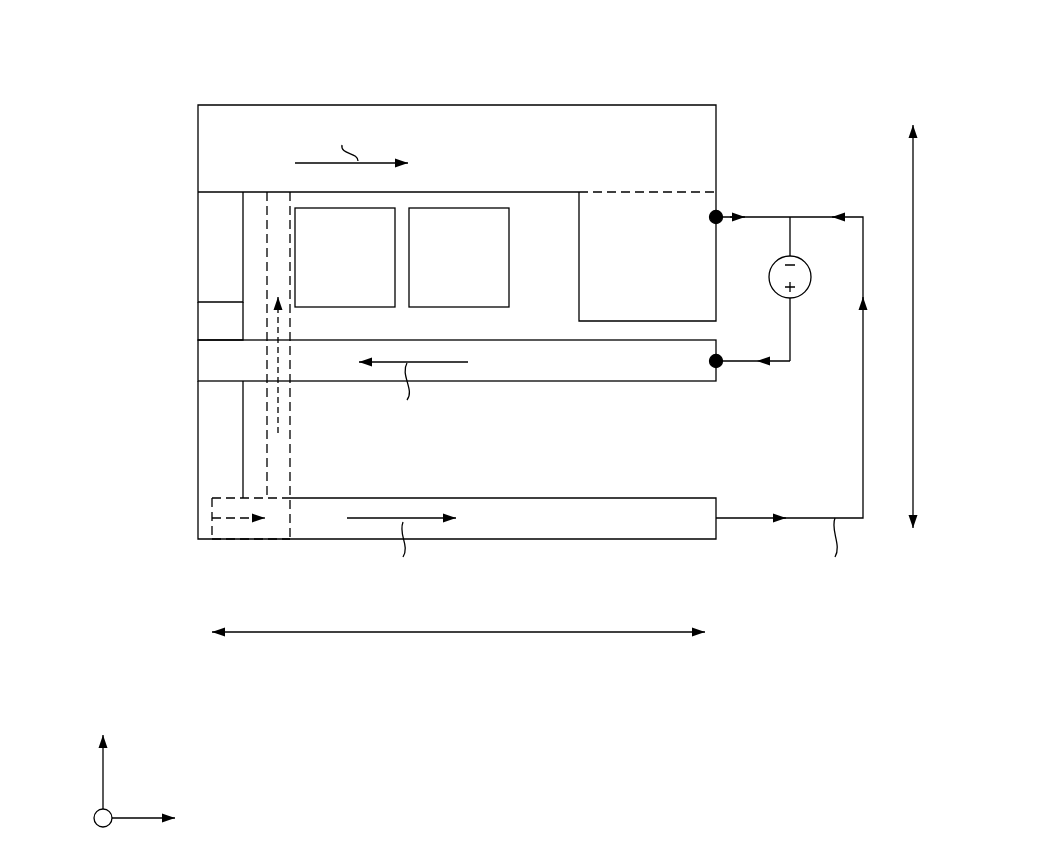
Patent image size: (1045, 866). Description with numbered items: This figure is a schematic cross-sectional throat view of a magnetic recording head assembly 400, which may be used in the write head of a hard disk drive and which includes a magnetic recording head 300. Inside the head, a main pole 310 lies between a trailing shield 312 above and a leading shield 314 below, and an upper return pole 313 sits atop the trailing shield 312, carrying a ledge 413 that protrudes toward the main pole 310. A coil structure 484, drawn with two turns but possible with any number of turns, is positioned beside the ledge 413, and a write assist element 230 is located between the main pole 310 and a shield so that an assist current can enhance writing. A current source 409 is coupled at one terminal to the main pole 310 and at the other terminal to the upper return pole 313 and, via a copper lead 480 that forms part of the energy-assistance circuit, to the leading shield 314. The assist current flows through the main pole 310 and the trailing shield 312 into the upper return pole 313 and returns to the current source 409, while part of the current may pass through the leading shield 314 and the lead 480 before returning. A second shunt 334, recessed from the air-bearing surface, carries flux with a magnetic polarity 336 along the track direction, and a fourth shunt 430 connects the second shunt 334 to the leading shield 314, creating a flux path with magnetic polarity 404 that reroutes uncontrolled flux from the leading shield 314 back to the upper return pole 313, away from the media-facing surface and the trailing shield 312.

The magnetic recording head assembly 400 is at (136, 60).
The magnetic recording head 300 is at (176, 145).
The upper return pole 313 is at (549, 148).
The trailing shield 312 is at (217, 230).
The second shunt 334 is at (267, 271).
The write assist element 230 is at (220, 322).
The coil structure 484 is at (324, 273).
The ledge 413 is at (596, 293).
The main pole 310 is at (516, 371).
The magnetic polarity 336 is at (277, 410).
The leading shield 314 is at (213, 468).
The lead 480 is at (519, 532).
The magnetic polarity 404 is at (230, 520).
The fourth shunt 430 is at (273, 532).
The current source 409 is at (803, 290).